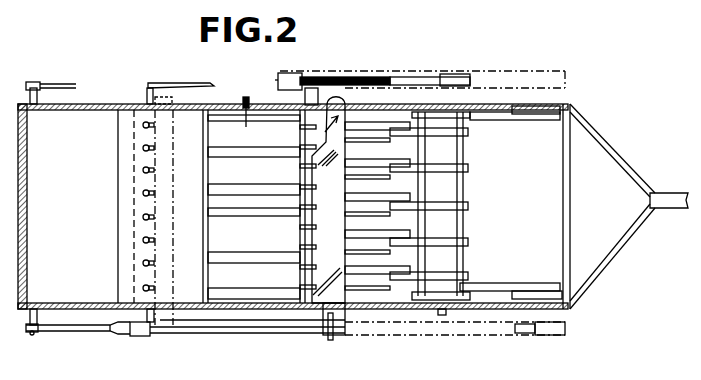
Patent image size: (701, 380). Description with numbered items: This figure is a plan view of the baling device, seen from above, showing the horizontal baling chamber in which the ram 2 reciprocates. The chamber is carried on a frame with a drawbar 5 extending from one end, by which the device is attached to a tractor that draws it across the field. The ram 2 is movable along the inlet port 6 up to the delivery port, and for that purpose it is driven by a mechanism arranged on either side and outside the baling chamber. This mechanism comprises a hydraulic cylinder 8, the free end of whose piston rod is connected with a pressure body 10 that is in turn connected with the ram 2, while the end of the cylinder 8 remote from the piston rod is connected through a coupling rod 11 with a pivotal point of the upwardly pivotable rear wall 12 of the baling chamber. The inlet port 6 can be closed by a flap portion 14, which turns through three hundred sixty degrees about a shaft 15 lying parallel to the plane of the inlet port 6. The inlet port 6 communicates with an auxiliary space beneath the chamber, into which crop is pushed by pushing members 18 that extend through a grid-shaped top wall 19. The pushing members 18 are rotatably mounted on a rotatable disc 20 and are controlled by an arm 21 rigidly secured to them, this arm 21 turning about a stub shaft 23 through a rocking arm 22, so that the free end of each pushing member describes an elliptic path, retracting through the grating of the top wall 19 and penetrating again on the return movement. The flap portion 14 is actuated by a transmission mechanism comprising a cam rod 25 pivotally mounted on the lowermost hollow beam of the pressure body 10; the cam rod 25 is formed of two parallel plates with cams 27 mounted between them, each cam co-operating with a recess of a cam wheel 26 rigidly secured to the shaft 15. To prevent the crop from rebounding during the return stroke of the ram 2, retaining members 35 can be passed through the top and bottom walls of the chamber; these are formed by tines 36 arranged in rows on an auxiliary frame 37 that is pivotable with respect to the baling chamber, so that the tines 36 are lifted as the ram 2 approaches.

The ram 2 is at (340, 244).
The drawbar 5 is at (622, 246).
The inlet port 6 is at (246, 97).
The hydraulic cylinder 8 is at (160, 337).
The pressure body 10 is at (490, 336).
The coupling rod 11 is at (83, 334).
The rear wall 12 is at (62, 128).
The flap portion 14 is at (228, 257).
The shaft 15 is at (306, 130).
The pushing members 18 is at (440, 235).
The grid-shaped top wall 19 is at (350, 198).
The rotatable disc 20 is at (446, 315).
The arm 21 is at (514, 283).
The rocking arm 22 is at (548, 305).
The stub shaft 23 is at (524, 292).
The cam rod 25 is at (470, 74).
The cam wheel 26 is at (280, 88).
The cams 27 is at (415, 74).
The retaining members 35 is at (200, 82).
The tines 36 is at (142, 193).
The auxiliary frame 37 is at (222, 333).